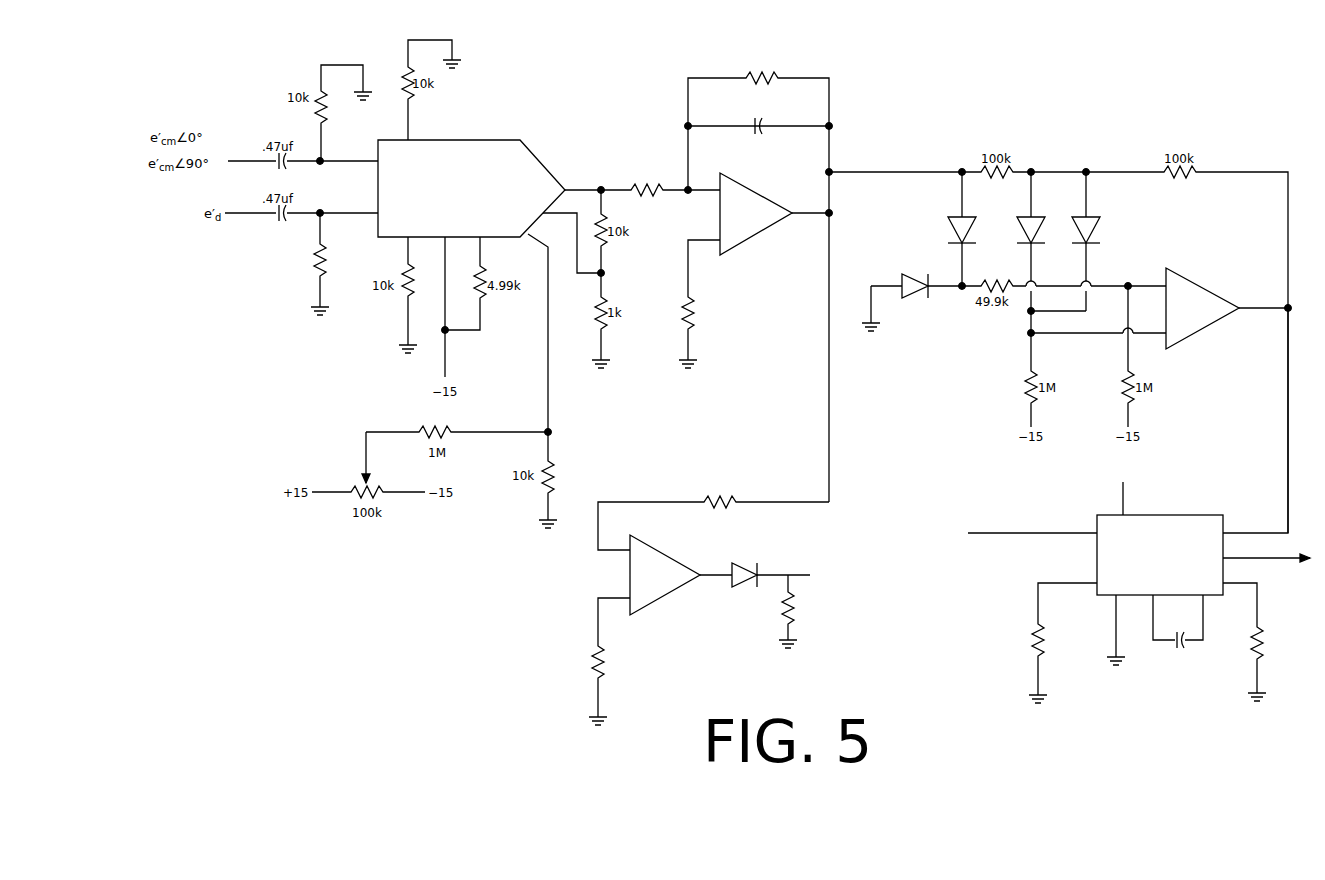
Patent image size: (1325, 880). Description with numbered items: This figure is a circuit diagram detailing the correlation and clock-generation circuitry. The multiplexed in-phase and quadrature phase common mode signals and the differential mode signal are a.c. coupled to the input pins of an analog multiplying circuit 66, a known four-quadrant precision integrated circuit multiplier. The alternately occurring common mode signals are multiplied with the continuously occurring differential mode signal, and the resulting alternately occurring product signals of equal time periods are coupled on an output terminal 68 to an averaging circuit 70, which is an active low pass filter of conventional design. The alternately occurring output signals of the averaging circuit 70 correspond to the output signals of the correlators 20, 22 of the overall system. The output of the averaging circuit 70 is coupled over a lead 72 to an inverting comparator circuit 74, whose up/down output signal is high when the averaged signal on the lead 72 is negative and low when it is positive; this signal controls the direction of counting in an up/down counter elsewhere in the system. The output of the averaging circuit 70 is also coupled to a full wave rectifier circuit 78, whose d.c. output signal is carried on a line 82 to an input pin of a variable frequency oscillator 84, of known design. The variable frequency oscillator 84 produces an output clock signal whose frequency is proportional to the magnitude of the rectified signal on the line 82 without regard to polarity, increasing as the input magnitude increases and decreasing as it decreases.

The correlator 20 is at (694, 268).
The correlator 22 is at (694, 268).
The analog multiplying circuit 66 is at (484, 140).
The output terminal 68 is at (618, 193).
The averaging circuit 70 is at (758, 245).
The lead 72 is at (830, 386).
The inverting comparator circuit 74 is at (662, 600).
The full wave rectifier circuit 78 is at (1212, 287).
The line 82 is at (1288, 400).
The variable frequency oscillator 84 is at (1185, 515).